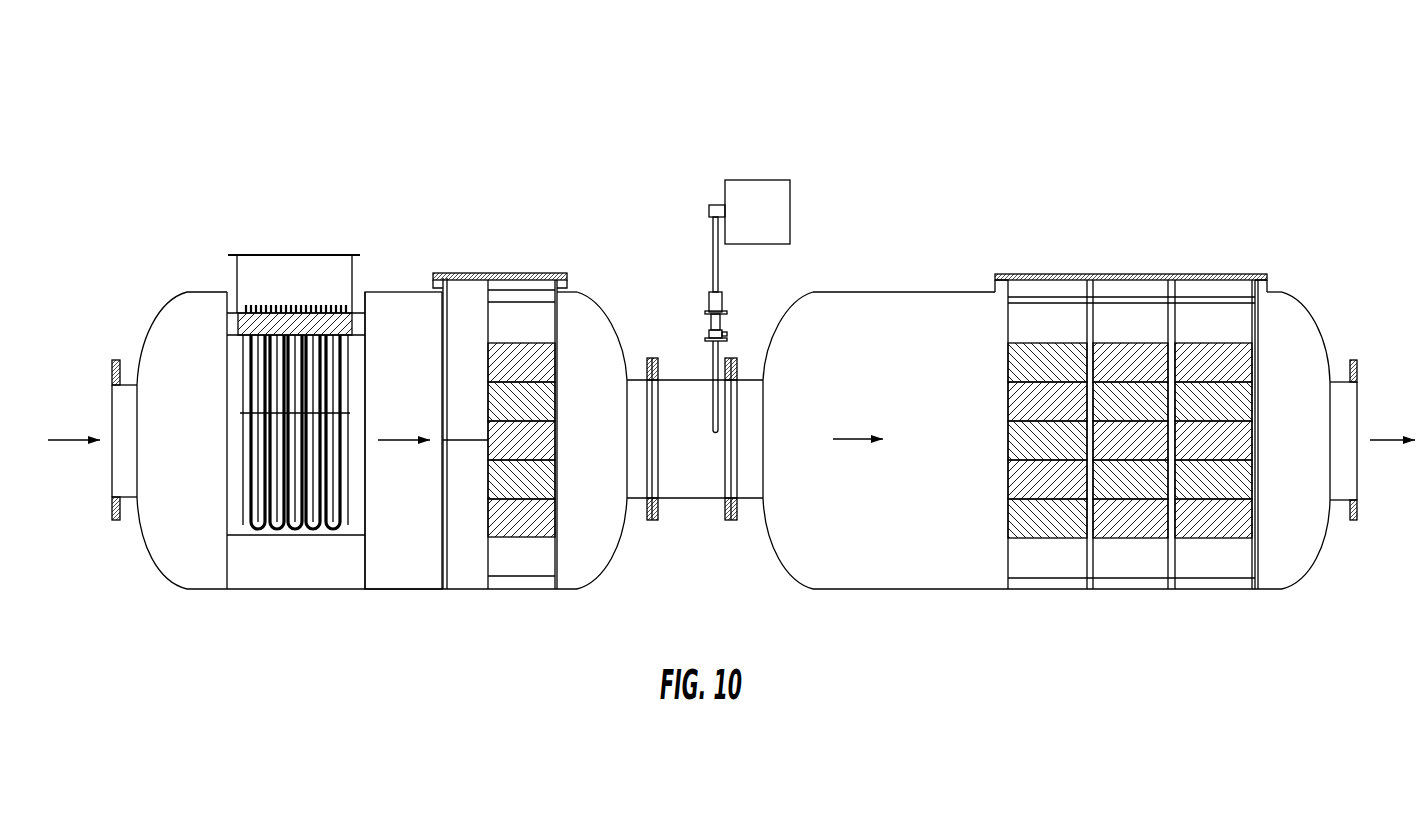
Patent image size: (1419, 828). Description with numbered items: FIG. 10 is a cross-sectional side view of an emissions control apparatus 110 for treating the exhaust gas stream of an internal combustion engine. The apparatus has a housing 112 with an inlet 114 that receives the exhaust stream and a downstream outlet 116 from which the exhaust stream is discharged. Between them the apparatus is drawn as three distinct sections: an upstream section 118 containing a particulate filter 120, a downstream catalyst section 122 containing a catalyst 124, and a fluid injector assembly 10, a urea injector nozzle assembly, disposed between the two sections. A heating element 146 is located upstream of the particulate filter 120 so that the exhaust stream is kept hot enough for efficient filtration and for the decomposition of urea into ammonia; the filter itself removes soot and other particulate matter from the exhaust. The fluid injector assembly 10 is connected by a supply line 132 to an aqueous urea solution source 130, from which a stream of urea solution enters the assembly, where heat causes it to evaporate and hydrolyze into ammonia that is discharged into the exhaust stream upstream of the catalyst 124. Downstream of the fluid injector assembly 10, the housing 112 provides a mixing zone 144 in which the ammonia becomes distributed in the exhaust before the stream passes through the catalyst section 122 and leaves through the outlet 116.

The fluid injector assembly 10 is at (706, 306).
The emissions control apparatus 110 is at (356, 158).
The housing 112 is at (583, 323).
The inlet 114 is at (98, 398).
The outlet 116 is at (1370, 486).
The upstream section 118 is at (401, 272).
The particulate filter 120 is at (517, 342).
The downstream catalyst section 122 is at (1131, 393).
The catalyst 124 is at (1073, 341).
The aqueous urea solution source 130 is at (790, 212).
The supply line 132 is at (719, 262).
The mixing zone 144 is at (940, 450).
The heating element 146 is at (303, 380).